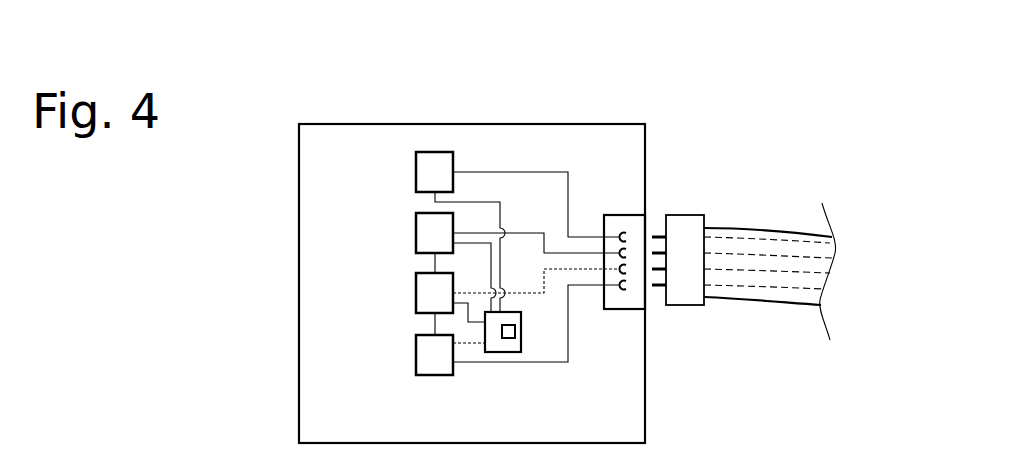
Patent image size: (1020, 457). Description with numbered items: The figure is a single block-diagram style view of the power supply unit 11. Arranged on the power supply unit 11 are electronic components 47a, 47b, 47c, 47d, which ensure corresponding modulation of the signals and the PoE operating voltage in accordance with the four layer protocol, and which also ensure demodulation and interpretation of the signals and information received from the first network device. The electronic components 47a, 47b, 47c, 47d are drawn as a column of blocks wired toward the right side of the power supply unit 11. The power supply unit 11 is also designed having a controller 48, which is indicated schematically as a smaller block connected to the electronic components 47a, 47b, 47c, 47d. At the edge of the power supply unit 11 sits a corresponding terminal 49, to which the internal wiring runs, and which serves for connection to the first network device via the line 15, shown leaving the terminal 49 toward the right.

The power supply unit 11 is at (630, 88).
The line 15 is at (765, 243).
The electronic component 47a is at (436, 168).
The electronic component 47b is at (436, 230).
The electronic component 47c is at (436, 290).
The electronic component 47d is at (436, 352).
The controller 48 is at (510, 345).
The terminal 49 is at (627, 215).